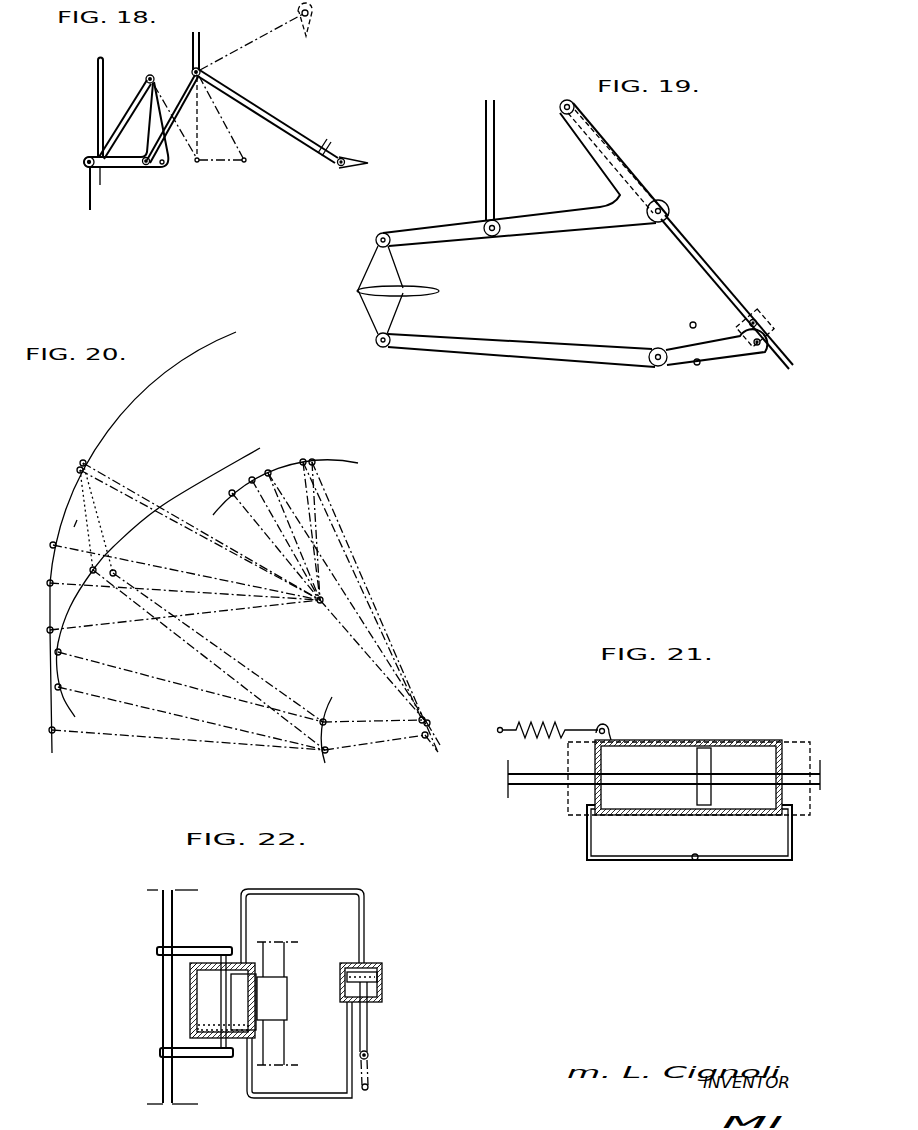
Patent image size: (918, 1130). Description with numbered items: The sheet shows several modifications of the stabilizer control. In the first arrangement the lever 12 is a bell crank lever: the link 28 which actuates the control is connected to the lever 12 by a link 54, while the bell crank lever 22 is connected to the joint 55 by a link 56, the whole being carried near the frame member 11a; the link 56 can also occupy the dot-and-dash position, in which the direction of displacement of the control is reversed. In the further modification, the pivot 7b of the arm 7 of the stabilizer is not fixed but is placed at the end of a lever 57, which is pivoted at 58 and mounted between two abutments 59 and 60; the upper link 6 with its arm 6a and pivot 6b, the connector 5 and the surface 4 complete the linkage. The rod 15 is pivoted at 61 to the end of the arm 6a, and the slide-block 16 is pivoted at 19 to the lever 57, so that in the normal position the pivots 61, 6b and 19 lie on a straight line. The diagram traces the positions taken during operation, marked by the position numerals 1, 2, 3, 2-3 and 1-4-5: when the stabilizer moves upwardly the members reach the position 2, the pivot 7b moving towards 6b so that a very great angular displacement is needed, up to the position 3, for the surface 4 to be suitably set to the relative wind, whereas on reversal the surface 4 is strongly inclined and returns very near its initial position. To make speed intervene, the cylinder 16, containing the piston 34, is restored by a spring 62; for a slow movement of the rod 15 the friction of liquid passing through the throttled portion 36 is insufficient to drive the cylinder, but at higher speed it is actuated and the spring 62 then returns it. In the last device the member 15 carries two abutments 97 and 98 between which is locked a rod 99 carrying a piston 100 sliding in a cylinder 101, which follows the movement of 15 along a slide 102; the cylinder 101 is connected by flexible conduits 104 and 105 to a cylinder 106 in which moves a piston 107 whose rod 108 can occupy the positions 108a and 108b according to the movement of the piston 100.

In FIG. 18, the link 28 is at (98, 82).
In FIG. 19, the link 28 is at (491, 170).
In FIG. 18, the link 54 is at (122, 120).
In FIG. 18, the bell crank lever 22 is at (299, 128).
In FIG. 18, the frame member 11a is at (90, 187).
In FIG. 18, the joint 55 is at (103, 179).
In FIG. 18, the lever 12 is at (141, 169).
In FIG. 18, the link 56 is at (148, 165).
In FIG. 19, the pivot 61 is at (566, 100).
In FIG. 19, the arm 6a is at (627, 162).
In FIG. 19, the pivot 6b is at (664, 209).
In FIG. 19, the upper link 6 is at (558, 224).
In FIG. 19, the surface 4 is at (418, 293).
In FIG. 20, the surface 4 is at (242, 582).
In FIG. 19, the connector 5 is at (376, 317).
In FIG. 20, the connector 5 is at (180, 606).
In FIG. 19, the arm 7 is at (492, 346).
In FIG. 19, the pivot 7b is at (657, 367).
In FIG. 19, the lever 57 is at (727, 347).
In FIG. 19, the rod 15 is at (712, 262).
In FIG. 21, the rod 15 is at (530, 778).
In FIG. 22, the rod 15 is at (163, 1000).
In FIG. 19, the slide-block 16 is at (752, 311).
In FIG. 21, the slide-block 16 is at (653, 741).
In FIG. 19, the pivot 19 is at (761, 325).
In FIG. 19, the pivot 58 is at (768, 340).
In FIG. 19, the abutment 59 is at (697, 365).
In FIG. 19, the abutment 60 is at (696, 315).
In FIG. 20, the position 1 is at (181, 613).
In FIG. 20, the position 2 is at (232, 590).
In FIG. 20, the position 3 is at (255, 596).
In FIG. 20, the positions 2-3 is at (389, 672).
In FIG. 20, the positions 1-4-5 is at (380, 737).
In FIG. 21, the spring 62 is at (548, 712).
In FIG. 21, the piston 34 is at (707, 770).
In FIG. 21, the throttled portion 36 is at (694, 860).
In FIG. 22, the abutment 97 is at (163, 1040).
In FIG. 22, the abutment 98 is at (203, 947).
In FIG. 22, the rod 99 is at (222, 988).
In FIG. 22, the piston 100 is at (222, 1056).
In FIG. 22, the cylinder 101 is at (252, 968).
In FIG. 22, the slide 102 is at (279, 1049).
In FIG. 22, the flexible conduit 104 is at (365, 910).
In FIG. 22, the flexible conduit 105 is at (352, 1098).
In FIG. 22, the cylinder 106 is at (383, 995).
In FIG. 22, the piston 107 is at (368, 973).
In FIG. 22, the rod 108 is at (368, 1028).
In FIG. 22, the position 108a is at (369, 1054).
In FIG. 22, the pivot 108b is at (369, 1086).